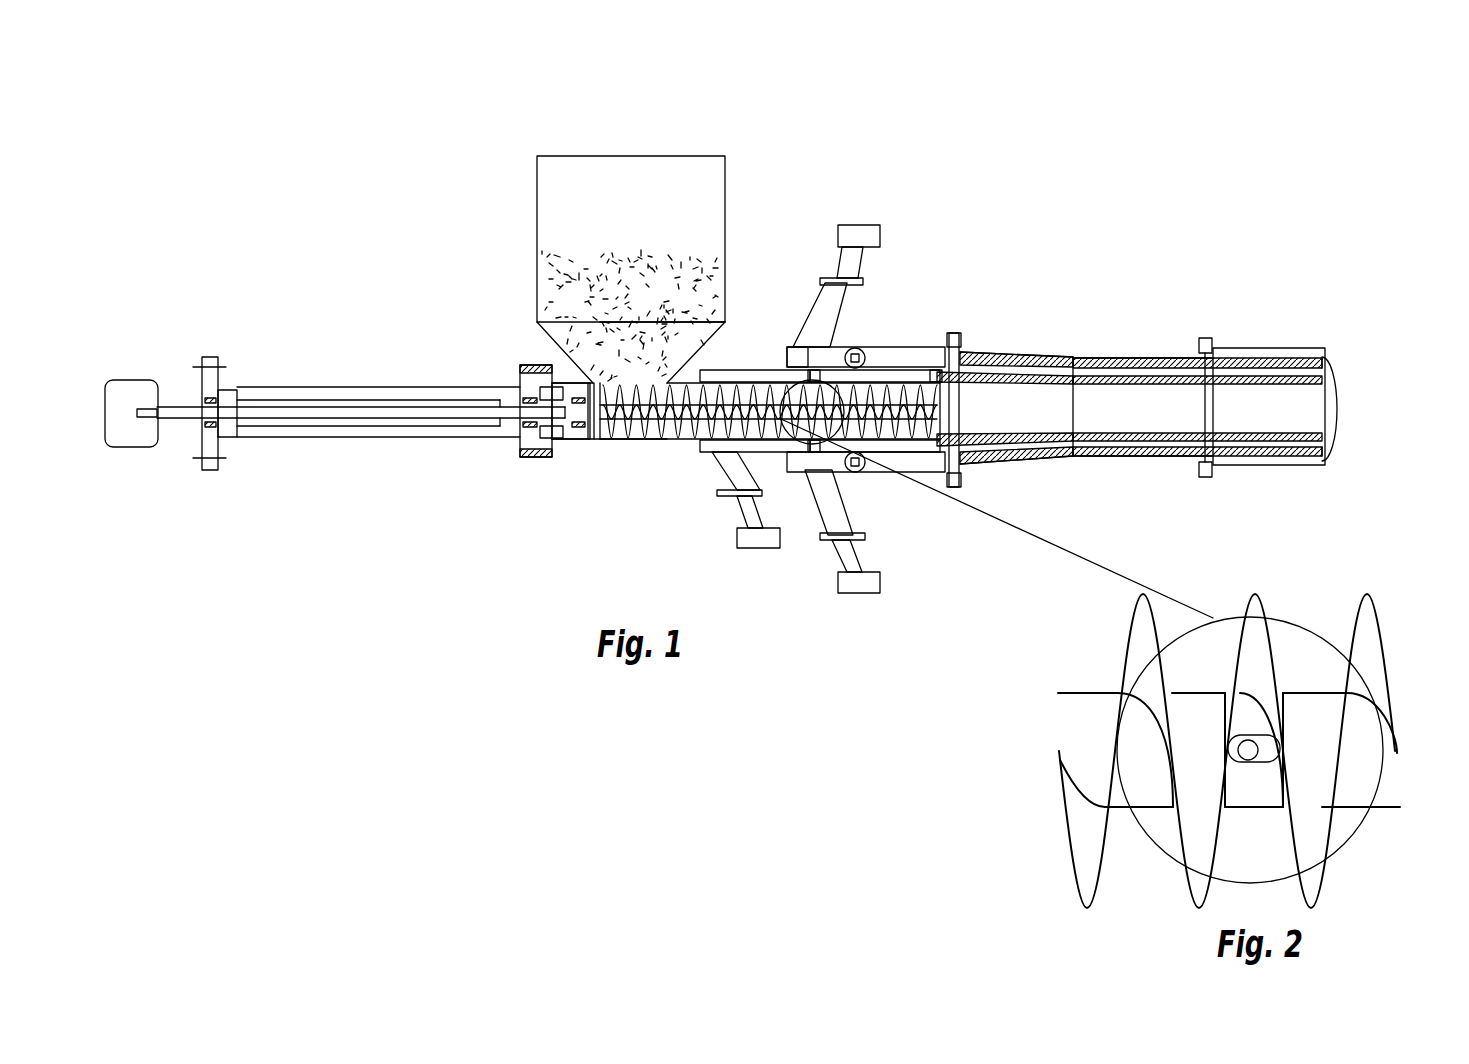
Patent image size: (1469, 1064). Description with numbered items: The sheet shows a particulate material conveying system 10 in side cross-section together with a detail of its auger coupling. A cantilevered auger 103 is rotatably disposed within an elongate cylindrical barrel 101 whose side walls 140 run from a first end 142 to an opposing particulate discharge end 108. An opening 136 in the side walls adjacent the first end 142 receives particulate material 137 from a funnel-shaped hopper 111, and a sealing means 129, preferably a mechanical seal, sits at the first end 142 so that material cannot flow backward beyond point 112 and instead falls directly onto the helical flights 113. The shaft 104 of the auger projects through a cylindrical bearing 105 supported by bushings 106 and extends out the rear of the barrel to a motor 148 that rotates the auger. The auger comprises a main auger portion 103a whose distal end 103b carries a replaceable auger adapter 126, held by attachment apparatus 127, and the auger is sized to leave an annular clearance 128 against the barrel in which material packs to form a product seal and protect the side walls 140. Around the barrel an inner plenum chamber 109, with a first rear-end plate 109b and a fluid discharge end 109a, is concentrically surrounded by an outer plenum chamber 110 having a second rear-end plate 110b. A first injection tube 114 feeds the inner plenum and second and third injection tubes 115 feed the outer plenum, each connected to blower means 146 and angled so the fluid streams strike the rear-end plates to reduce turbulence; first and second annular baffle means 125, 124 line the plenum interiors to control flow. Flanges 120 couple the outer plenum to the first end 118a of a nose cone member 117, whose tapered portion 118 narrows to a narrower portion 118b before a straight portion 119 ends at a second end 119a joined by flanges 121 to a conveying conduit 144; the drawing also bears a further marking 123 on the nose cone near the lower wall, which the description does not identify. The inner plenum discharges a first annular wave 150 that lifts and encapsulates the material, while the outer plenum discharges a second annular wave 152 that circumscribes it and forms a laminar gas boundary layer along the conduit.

In FIG. 1, the particulate material conveying system 10 is at (1080, 184).
In FIG. 1, the barrel 101 is at (320, 388).
In FIG. 1, the auger 103 is at (565, 440).
In FIG. 2, the main auger portion 103a is at (1088, 768).
In FIG. 2, the distal end 103b is at (1225, 710).
In FIG. 1, the shaft 104 is at (255, 410).
In FIG. 1, the cylindrical bearing 105 is at (205, 398).
In FIG. 1, the bushings 106 is at (228, 390).
In FIG. 1, the particulate discharge end 108 is at (960, 345).
In FIG. 1, the inner plenum chamber 109 is at (915, 368).
In FIG. 1, the fluid discharge end 109a is at (940, 372).
In FIG. 1, the first rear-end plate 109b is at (712, 372).
In FIG. 1, the outer plenum chamber 110 is at (875, 356).
In FIG. 1, the second rear-end plate 110b is at (805, 347).
In FIG. 1, the hopper 111 is at (613, 195).
In FIG. 1, the point 112 is at (575, 350).
In FIG. 1, the helical flights 113 is at (720, 340).
In FIG. 2, the helical flights 113 is at (1382, 655).
In FIG. 1, the first injection tube 114 is at (730, 472).
In FIG. 1, the second and third injection tubes 115 is at (845, 300).
In FIG. 1, the nose cone member 117 is at (1015, 350).
In FIG. 1, the tapered portion 118 is at (1070, 413).
In FIG. 1, the first end 118a is at (965, 460).
In FIG. 1, the narrower portion 118b is at (1085, 356).
In FIG. 1, the straight portion 119 is at (1150, 387).
In FIG. 1, the second end 119a is at (1163, 460).
In FIG. 1, the flanges 120 is at (955, 487).
In FIG. 1, the flanges 121 is at (1205, 336).
In FIG. 1, the tube junction 123 is at (1058, 460).
In FIG. 1, the second annular baffle means 124 is at (875, 472).
In FIG. 1, the first annular baffle means 125 is at (780, 445).
In FIG. 1, the auger adapter 126 is at (938, 372).
In FIG. 2, the auger adapter 126 is at (1333, 752).
In FIG. 2, the attachment apparatus 127 is at (1248, 740).
In FIG. 1, the annular clearance 128 is at (672, 440).
In FIG. 1, the sealing means 129 is at (593, 440).
In FIG. 1, the opening 136 is at (685, 313).
In FIG. 1, the particulate material 137 is at (590, 245).
In FIG. 1, the side walls 140 is at (645, 440).
In FIG. 1, the first end 142 is at (572, 440).
In FIG. 1, the conveying conduit 144 is at (1285, 348).
In FIG. 1, the blower means 146 is at (855, 222).
In FIG. 1, the motor 148 is at (125, 425).
In FIG. 1, the first annular wave 150 is at (1338, 380).
In FIG. 1, the second annular wave 152 is at (1340, 362).